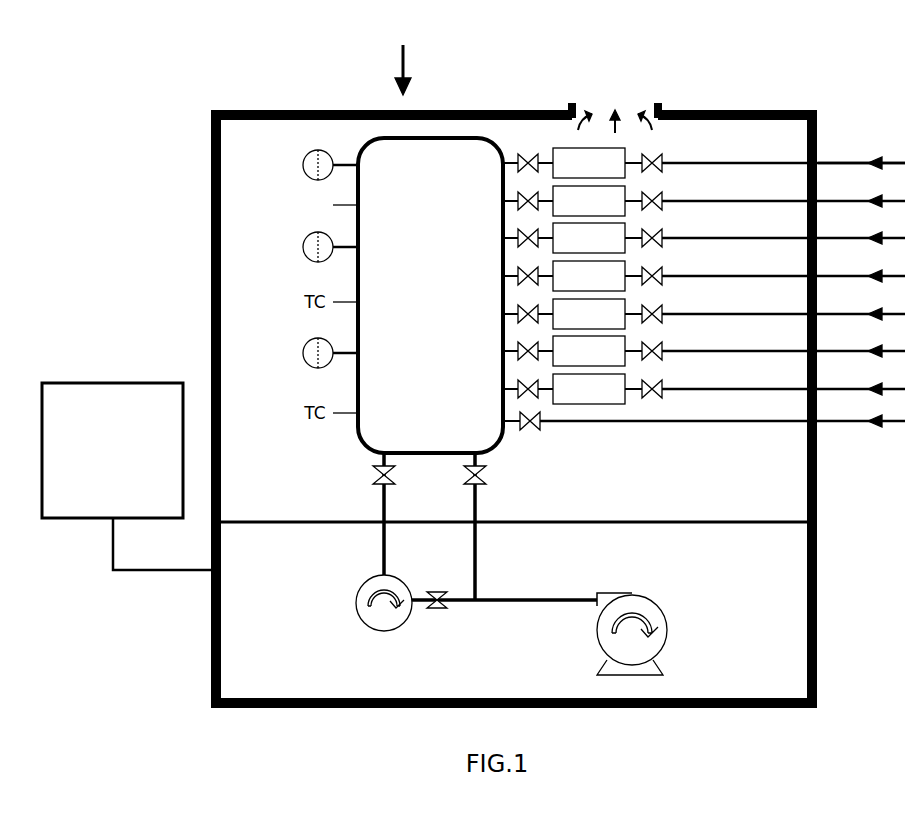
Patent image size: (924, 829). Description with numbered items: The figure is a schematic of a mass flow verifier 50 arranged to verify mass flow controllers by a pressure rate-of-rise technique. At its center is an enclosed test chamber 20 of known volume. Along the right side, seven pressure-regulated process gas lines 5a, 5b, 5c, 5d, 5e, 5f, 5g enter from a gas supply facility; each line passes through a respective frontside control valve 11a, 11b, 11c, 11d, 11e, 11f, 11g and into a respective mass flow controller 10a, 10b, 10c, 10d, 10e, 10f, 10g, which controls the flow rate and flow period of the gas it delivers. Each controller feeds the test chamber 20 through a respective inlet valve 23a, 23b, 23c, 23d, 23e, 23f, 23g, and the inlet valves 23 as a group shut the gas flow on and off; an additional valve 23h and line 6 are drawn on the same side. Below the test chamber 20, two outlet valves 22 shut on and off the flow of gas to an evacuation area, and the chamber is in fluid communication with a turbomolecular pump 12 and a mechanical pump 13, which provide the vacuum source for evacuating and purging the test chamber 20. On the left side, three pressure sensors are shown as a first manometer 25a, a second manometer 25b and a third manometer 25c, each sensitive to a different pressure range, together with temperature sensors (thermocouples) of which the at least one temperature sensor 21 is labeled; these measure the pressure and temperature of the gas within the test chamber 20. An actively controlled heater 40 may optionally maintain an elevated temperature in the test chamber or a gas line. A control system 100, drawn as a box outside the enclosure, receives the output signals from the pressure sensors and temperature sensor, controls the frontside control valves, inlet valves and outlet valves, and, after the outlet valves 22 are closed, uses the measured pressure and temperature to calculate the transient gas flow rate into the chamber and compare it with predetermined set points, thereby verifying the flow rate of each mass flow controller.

The mass flow verifier 50 is at (403, 60).
The inlet valves 23 is at (579, 83).
The heater 40 is at (848, 160).
The test chamber 20 is at (403, 293).
The temperature sensor 21 is at (296, 205).
The first manometer 25a is at (302, 165).
The second manometer 25b is at (302, 250).
The third manometer 25c is at (302, 355).
The inlet valve 23a is at (526, 152).
The inlet valve 23b is at (520, 195).
The inlet valve 23c is at (520, 232).
The inlet valve 23d is at (520, 270).
The inlet valve 23e is at (520, 308).
The inlet valve 23f is at (520, 345).
The inlet valve 23g is at (520, 383).
The valve 23h is at (538, 428).
The mass flow controller 10a is at (597, 163).
The mass flow controller 10b is at (597, 201).
The mass flow controller 10c is at (597, 238).
The mass flow controller 10d is at (597, 276).
The mass flow controller 10e is at (597, 314).
The mass flow controller 10f is at (597, 351).
The mass flow controller 10g is at (597, 389).
The frontside control valve 11a is at (662, 157).
The frontside control valve 11b is at (665, 199).
The frontside control valve 11c is at (665, 236).
The frontside control valve 11d is at (665, 274).
The frontside control valve 11e is at (665, 312).
The frontside control valve 11f is at (665, 349).
The frontside control valve 11g is at (665, 387).
The gas line 5a is at (757, 160).
The gas line 5b is at (758, 200).
The gas line 5c is at (758, 237).
The gas line 5d is at (758, 275).
The gas line 5e is at (758, 313).
The gas line 5f is at (758, 350).
The gas line 5g is at (758, 388).
The gas line 6 is at (768, 424).
The outlet valves 22 is at (372, 474).
The turbomolecular pump 12 is at (358, 613).
The mechanical pump 13 is at (668, 636).
The control system 100 is at (126, 476).